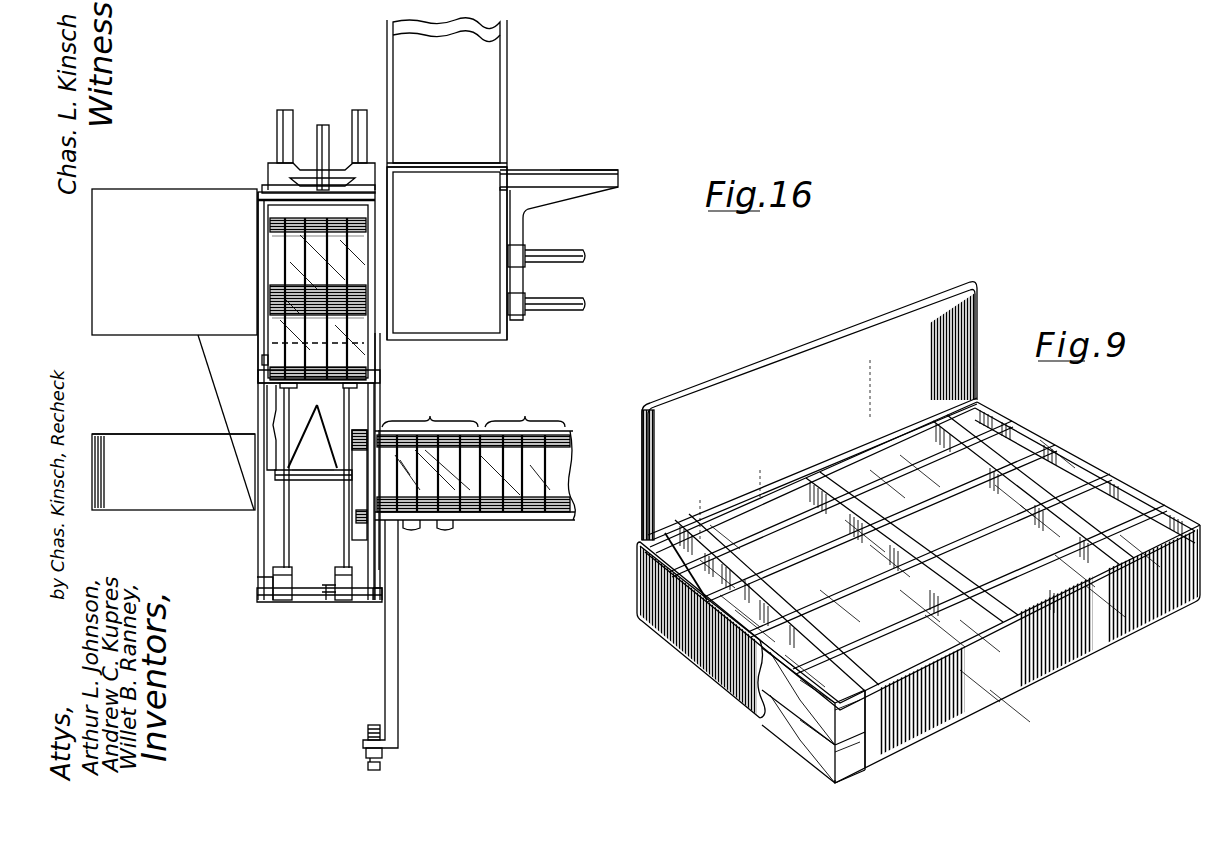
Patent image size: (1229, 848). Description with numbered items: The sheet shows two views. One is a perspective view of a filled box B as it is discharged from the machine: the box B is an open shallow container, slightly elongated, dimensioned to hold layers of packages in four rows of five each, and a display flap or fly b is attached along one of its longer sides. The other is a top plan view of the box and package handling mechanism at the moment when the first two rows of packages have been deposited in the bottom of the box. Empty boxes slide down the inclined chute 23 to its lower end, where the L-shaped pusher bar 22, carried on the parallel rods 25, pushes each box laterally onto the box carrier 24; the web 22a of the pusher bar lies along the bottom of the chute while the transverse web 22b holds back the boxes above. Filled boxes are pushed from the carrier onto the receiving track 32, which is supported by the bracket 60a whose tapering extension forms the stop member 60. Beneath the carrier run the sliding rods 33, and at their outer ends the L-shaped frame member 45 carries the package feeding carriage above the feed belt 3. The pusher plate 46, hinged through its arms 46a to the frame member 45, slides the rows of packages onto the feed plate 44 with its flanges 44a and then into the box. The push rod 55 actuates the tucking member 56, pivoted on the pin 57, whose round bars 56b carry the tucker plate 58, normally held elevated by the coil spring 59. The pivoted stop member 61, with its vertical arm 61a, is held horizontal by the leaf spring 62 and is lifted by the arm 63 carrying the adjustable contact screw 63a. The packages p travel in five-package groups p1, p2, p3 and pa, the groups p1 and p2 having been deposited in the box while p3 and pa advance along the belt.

In FIG. 16, the feed belt 3 is at (190, 436).
In FIG. 16, the pusher bar 22 is at (566, 203).
In FIG. 16, the longitudinal web 22a is at (503, 190).
In FIG. 16, the transverse web 22b is at (598, 171).
In FIG. 16, the inclined chute 23 is at (387, 38).
In FIG. 16, the box carrier 24 is at (262, 195).
In FIG. 16, the parallel rods 25 is at (582, 264).
In FIG. 16, the receiving track 32 is at (178, 189).
In FIG. 16, the sliding rods 33 is at (352, 119).
In FIG. 16, the feed plate 44 is at (261, 352).
In FIG. 16, the flange 44a is at (262, 401).
In FIG. 16, the frame member 45 is at (257, 553).
In FIG. 16, the pusher plate 46 is at (298, 437).
In FIG. 16, the arms 46a is at (343, 440).
In FIG. 16, the push rod 55 is at (319, 150).
In FIG. 16, the package-tucking member 56 is at (290, 604).
In FIG. 16, the round bars 56b is at (343, 543).
In FIG. 16, the pivot pin 57 is at (322, 604).
In FIG. 16, the tucker plate 58 is at (336, 402).
In FIG. 16, the coil spring 59 is at (322, 586).
In FIG. 16, the stop member 60 is at (173, 472).
In FIG. 16, the bracket 60a is at (204, 353).
In FIG. 16, the stop member 61 is at (381, 369).
In FIG. 16, the vertical arm 61a is at (383, 627).
In FIG. 16, the leaf spring 62 is at (357, 502).
In FIG. 16, the arm 63 is at (399, 648).
In FIG. 16, the adjustable contact screw 63a is at (366, 743).
In FIG. 16, the packages p is at (515, 495).
In FIG. 16, the first package group p1 is at (318, 245).
In FIG. 16, the second package group p2 is at (318, 330).
In FIG. 16, the third package group p3 is at (430, 411).
In FIG. 16, the fourth package group pa is at (525, 411).
In FIG. 9, the flap b is at (797, 361).
In FIG. 9, the box B is at (682, 641).